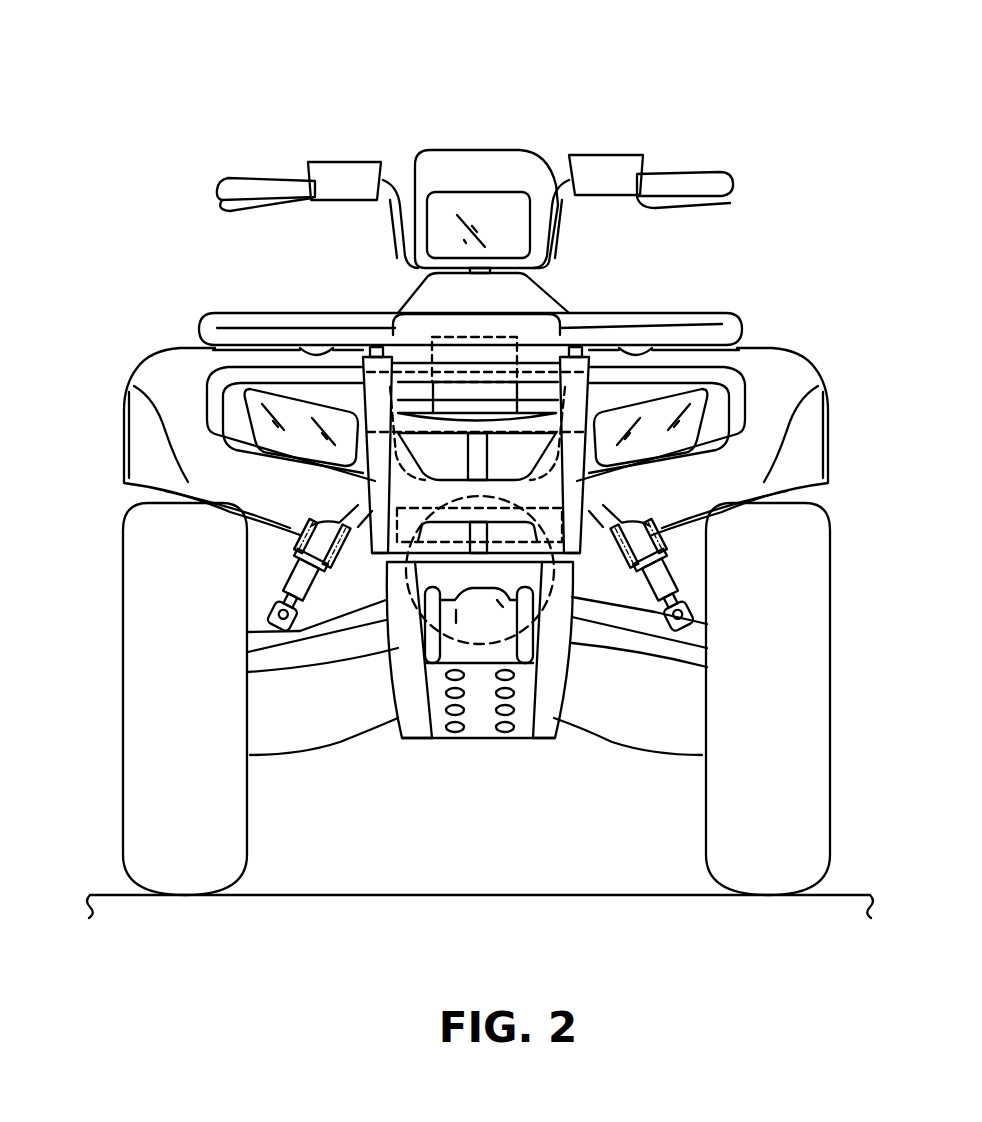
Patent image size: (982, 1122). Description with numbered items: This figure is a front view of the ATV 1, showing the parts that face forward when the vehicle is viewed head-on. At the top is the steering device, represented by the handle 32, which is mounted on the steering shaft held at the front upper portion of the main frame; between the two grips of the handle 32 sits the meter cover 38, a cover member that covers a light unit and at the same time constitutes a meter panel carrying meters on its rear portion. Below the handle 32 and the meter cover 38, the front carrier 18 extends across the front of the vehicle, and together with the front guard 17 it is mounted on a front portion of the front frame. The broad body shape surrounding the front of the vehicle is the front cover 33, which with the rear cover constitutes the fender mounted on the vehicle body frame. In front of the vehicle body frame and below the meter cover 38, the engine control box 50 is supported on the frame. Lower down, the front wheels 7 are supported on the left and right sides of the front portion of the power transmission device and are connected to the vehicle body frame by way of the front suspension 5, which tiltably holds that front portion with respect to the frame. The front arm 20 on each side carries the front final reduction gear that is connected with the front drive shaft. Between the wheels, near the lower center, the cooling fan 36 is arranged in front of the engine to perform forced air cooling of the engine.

The ATV 1 is at (175, 128).
The front suspension 5 is at (272, 569).
The front wheels 7 is at (115, 838).
The front guard 17 is at (356, 352).
The front carrier 18 is at (605, 303).
The front arm 20 is at (330, 758).
The handle 32 is at (262, 176).
The front cover 33 is at (160, 330).
The cooling fan 36 is at (394, 581).
The meter cover 38 is at (490, 168).
The engine control box 50 is at (420, 338).